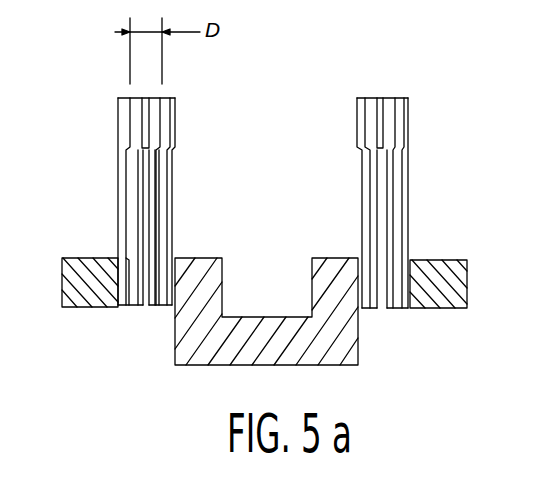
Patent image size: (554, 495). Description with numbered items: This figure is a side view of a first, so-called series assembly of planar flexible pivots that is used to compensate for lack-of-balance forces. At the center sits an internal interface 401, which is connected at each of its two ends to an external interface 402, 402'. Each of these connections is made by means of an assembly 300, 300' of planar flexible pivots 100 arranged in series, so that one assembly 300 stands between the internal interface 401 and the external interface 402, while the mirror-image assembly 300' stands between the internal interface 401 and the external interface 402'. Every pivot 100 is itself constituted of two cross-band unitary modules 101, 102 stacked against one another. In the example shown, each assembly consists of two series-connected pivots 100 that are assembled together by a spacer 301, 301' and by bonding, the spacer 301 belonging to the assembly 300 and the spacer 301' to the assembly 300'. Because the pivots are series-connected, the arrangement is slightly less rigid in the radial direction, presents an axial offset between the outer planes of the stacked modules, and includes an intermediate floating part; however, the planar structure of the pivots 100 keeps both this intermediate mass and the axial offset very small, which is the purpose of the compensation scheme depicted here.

The assembly of planar flexible pivots 300 is at (425, 203).
The assembly of planar flexible pivots 300' is at (111, 201).
The spacer 301 is at (345, 174).
The spacer 301' is at (195, 105).
The cross-band unitary module 101 is at (390, 98).
The planar flexible pivot 100 is at (408, 90).
The cross-band unitary module 102 is at (410, 120).
The internal interface 401 is at (205, 364).
The external interface 402 is at (456, 255).
The external interface 402' is at (75, 251).